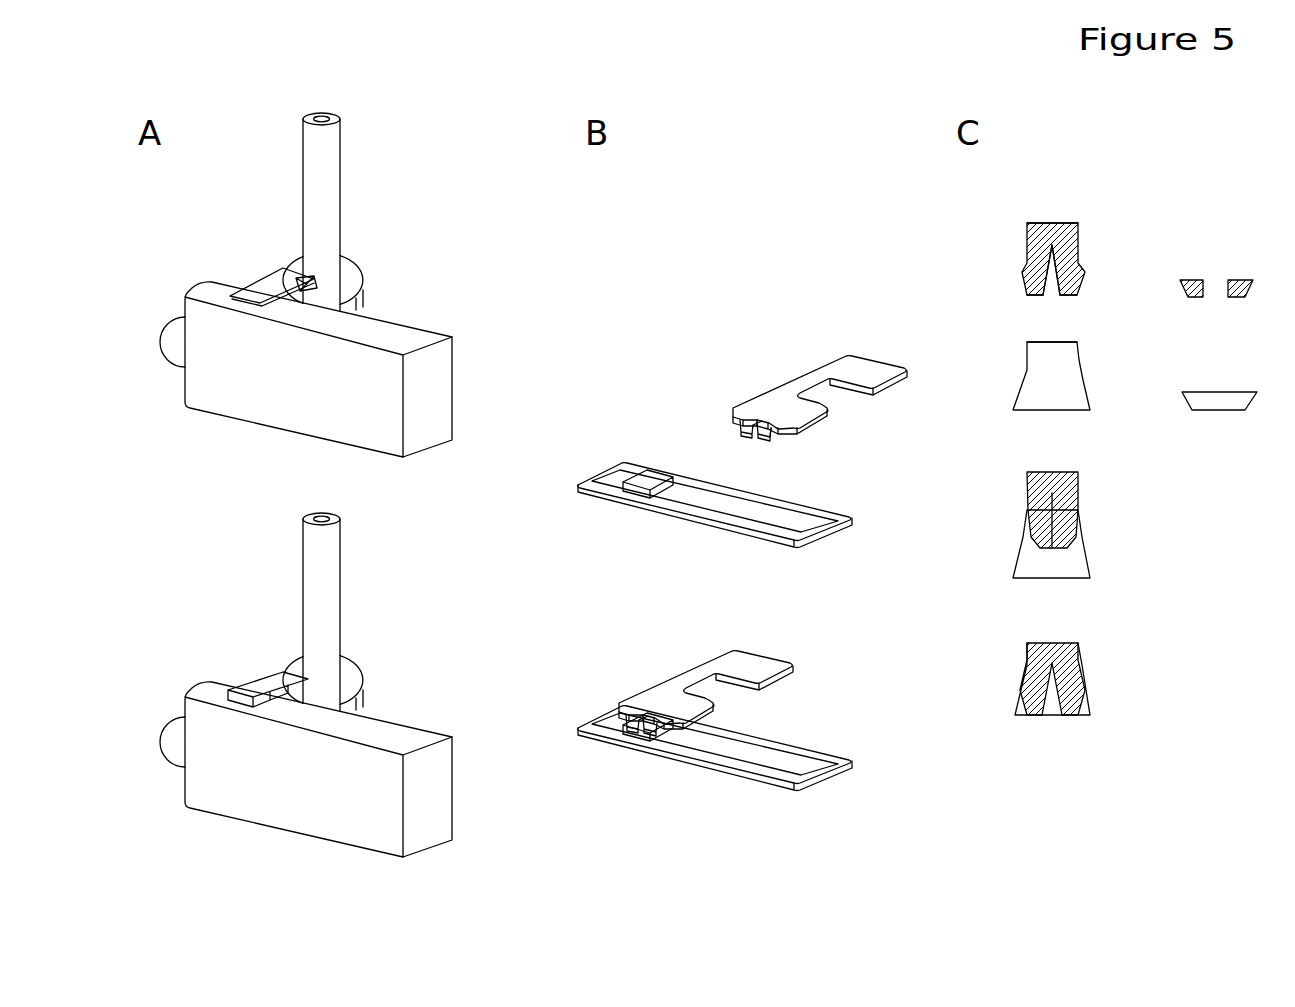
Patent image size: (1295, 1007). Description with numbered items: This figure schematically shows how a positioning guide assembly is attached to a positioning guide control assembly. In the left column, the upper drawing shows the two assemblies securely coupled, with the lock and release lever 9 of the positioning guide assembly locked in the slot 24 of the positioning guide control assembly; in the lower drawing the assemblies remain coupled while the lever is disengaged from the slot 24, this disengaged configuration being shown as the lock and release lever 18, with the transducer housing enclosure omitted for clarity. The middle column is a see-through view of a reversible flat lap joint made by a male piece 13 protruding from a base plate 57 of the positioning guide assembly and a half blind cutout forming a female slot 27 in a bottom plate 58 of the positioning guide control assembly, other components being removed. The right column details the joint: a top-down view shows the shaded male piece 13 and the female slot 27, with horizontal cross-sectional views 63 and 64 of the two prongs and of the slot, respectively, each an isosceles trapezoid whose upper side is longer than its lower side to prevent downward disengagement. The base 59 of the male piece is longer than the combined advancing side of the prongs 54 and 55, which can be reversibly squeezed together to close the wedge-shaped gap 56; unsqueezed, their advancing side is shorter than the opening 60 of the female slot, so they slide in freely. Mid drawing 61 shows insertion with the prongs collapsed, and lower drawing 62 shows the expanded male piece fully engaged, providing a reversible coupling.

The lock and release lever 9 is at (258, 282).
The slot 24 is at (250, 286).
The lock and release lever 18 is at (258, 680).
The base plate 57 is at (763, 395).
The female slot 27 is at (655, 473).
The male piece 13 is at (758, 443).
The bottom plate 58 is at (760, 493).
The base of the male piece 59 is at (1028, 222).
The wedge-shaped gap 56 is at (1052, 278).
The prong 54 is at (1028, 296).
The prong 55 is at (1076, 296).
The opening of the female slot 60 is at (1033, 341).
The horizontal cross-sectional view of the prongs 63 is at (1180, 279).
The horizontal cross-sectional view of the female slot 64 is at (1182, 391).
The mid drawing of ongoing insertion 61 is at (1033, 525).
The lower drawing of engaged male piece 62 is at (1033, 679).